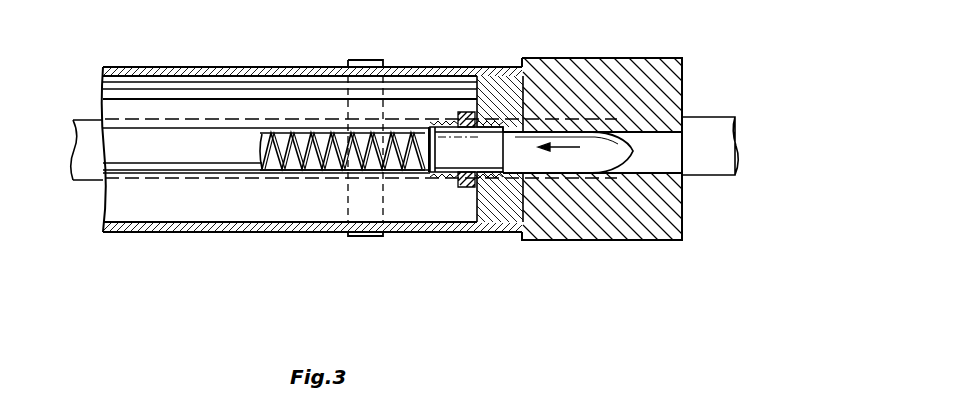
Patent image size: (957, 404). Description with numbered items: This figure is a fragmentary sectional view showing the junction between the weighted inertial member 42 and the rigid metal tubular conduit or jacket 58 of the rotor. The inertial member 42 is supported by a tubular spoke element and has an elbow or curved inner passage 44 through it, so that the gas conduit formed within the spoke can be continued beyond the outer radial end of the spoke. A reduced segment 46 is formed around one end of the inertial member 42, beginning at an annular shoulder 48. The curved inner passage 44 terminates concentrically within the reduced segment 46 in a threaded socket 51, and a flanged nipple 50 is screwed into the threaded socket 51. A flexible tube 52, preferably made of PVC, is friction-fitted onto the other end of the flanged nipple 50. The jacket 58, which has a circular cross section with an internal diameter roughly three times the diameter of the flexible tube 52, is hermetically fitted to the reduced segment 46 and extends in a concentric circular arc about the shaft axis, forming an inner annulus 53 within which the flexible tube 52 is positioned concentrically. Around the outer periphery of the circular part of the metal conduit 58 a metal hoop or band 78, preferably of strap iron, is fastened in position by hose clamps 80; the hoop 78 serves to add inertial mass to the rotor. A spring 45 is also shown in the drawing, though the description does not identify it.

The weighted inertial member 42 is at (683, 213).
The curved inner passage 44 is at (567, 162).
The spring 45 is at (318, 174).
The reduced segment 46 is at (500, 118).
The annular shoulder 48 is at (521, 233).
The flanged nipple 50 is at (465, 187).
The threaded socket 51 is at (503, 118).
The flexible tube 52 is at (147, 162).
The inner annulus 53 is at (203, 203).
The tubular conduit or jacket 58 is at (270, 232).
The metal hoop or band 78 is at (718, 140).
The hose clamps 80 is at (372, 60).